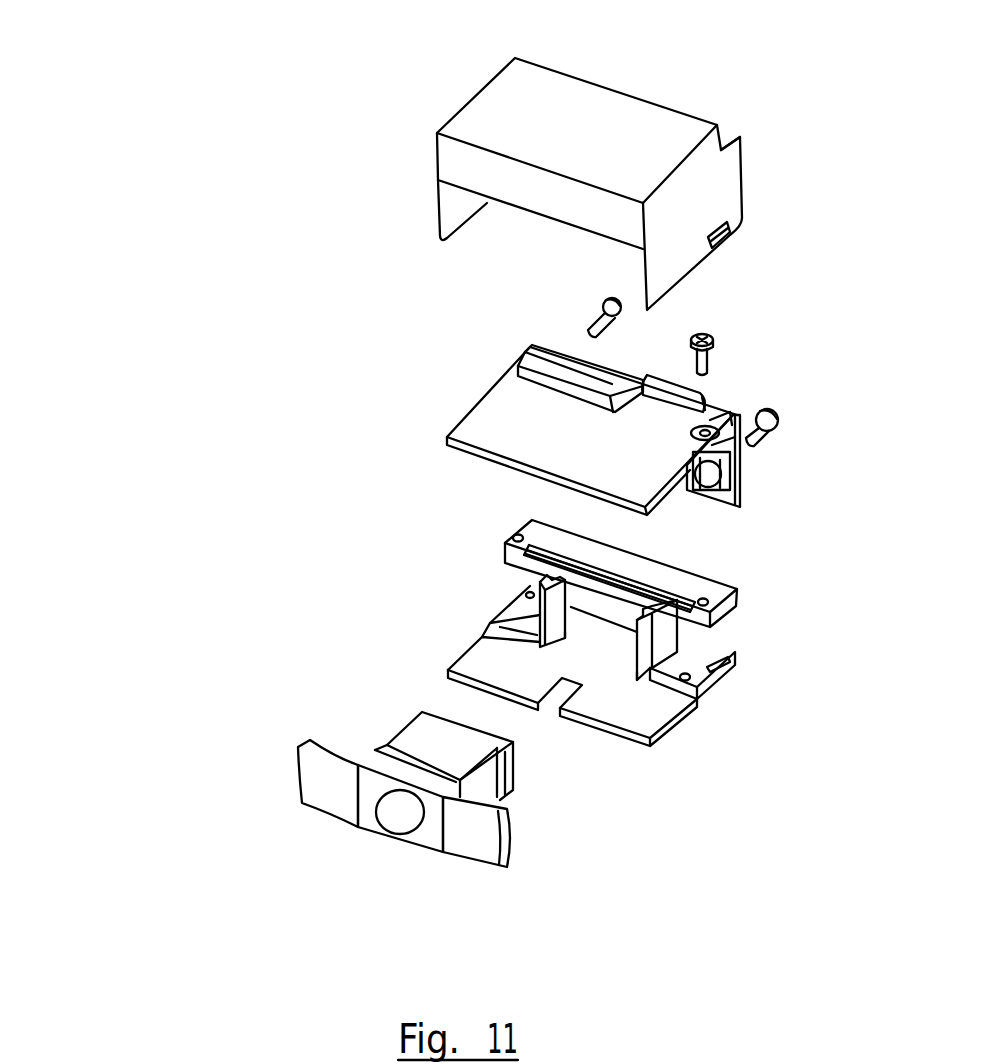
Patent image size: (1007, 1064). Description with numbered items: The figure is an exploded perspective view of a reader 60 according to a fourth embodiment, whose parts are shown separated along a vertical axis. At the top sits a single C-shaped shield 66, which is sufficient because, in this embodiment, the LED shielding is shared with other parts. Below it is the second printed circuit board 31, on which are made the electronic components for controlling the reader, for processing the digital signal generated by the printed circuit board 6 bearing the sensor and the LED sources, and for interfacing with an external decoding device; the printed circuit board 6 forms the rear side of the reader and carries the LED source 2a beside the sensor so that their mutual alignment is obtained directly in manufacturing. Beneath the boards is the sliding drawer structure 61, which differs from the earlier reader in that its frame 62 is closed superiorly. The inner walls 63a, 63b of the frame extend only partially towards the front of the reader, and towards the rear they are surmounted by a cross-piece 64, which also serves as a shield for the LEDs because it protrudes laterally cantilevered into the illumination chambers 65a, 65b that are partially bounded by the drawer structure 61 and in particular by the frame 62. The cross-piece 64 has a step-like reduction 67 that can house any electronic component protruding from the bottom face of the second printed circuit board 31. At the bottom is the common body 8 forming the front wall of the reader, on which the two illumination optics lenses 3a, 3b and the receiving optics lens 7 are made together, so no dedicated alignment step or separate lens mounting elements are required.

The reader 60 is at (145, 140).
The C-shaped shield 66 is at (725, 175).
The second printed circuit board 31 is at (493, 427).
The LED source 2a is at (743, 453).
The printed circuit board 6 is at (743, 488).
The step-like reduction 67 is at (643, 582).
The cross-piece 64 is at (710, 590).
The inner wall 63a is at (653, 650).
The inner wall 63b is at (547, 610).
The illumination chamber 65a is at (668, 697).
The illumination chamber 65b is at (503, 640).
The sliding drawer structure 61 is at (290, 707).
The common body 8 is at (517, 846).
The frame 62 is at (516, 776).
The illumination optics lens 3b is at (320, 787).
The receiving optics lens 7 is at (398, 815).
The illumination optics lens 3a is at (482, 862).